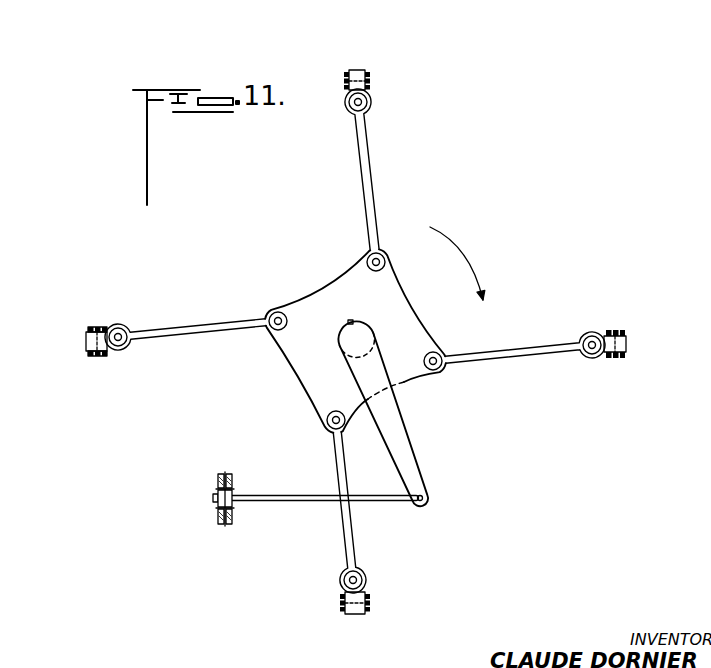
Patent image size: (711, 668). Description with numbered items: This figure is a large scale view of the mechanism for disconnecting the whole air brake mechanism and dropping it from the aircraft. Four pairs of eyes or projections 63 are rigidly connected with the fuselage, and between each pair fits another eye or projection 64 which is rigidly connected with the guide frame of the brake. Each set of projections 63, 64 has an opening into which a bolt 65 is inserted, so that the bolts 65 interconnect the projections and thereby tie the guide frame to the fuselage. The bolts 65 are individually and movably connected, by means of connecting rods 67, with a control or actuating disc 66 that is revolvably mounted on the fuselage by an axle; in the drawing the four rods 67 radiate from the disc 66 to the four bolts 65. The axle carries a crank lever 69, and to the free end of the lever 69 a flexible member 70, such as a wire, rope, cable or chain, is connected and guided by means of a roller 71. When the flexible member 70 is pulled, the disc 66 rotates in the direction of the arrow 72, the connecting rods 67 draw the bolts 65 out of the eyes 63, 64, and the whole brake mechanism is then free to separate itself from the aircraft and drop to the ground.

The eyes or projections 63 is at (102, 327).
The eye or projection 64 is at (100, 356).
The bolt 65 is at (357, 70).
The control or actuating disc 66 is at (326, 288).
The connecting rod 67 is at (372, 167).
The crank lever 69 is at (412, 448).
The flexible member 70 is at (267, 505).
The roller 71 is at (220, 505).
The arrow 72 is at (458, 250).